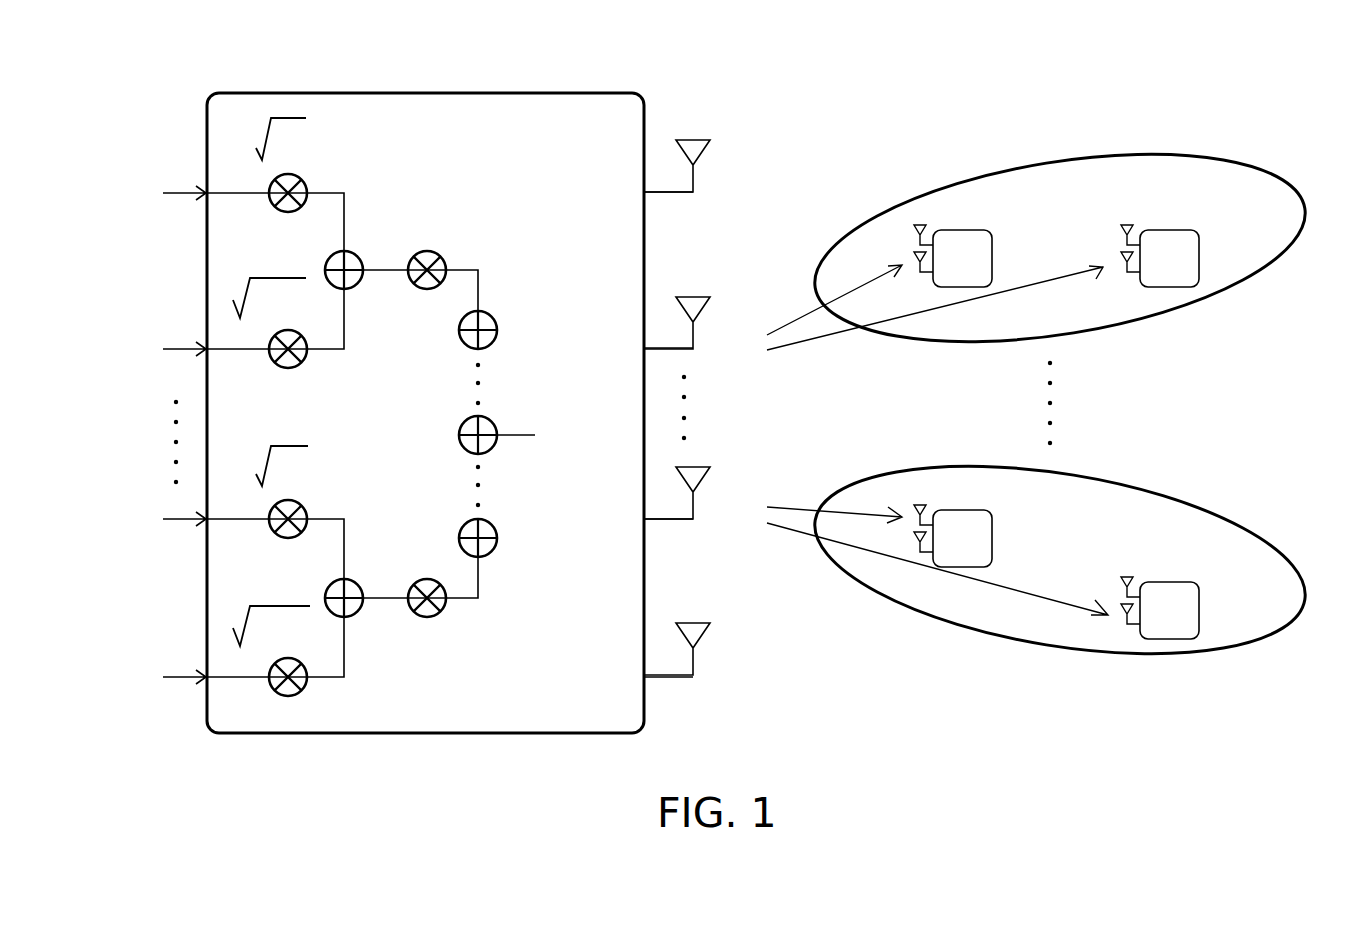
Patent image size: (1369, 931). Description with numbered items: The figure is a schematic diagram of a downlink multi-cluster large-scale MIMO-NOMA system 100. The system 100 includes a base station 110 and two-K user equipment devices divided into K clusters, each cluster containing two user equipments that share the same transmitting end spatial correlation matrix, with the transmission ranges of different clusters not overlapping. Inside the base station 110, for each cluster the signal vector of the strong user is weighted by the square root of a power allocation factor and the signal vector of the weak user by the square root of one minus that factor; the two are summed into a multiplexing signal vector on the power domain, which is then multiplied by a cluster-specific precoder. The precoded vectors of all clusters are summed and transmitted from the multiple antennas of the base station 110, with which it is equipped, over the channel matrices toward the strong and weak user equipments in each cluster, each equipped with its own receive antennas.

The downlink large-scale MIMO-NOMA system 100 is at (735, 395).
The base station 110 is at (537, 93).